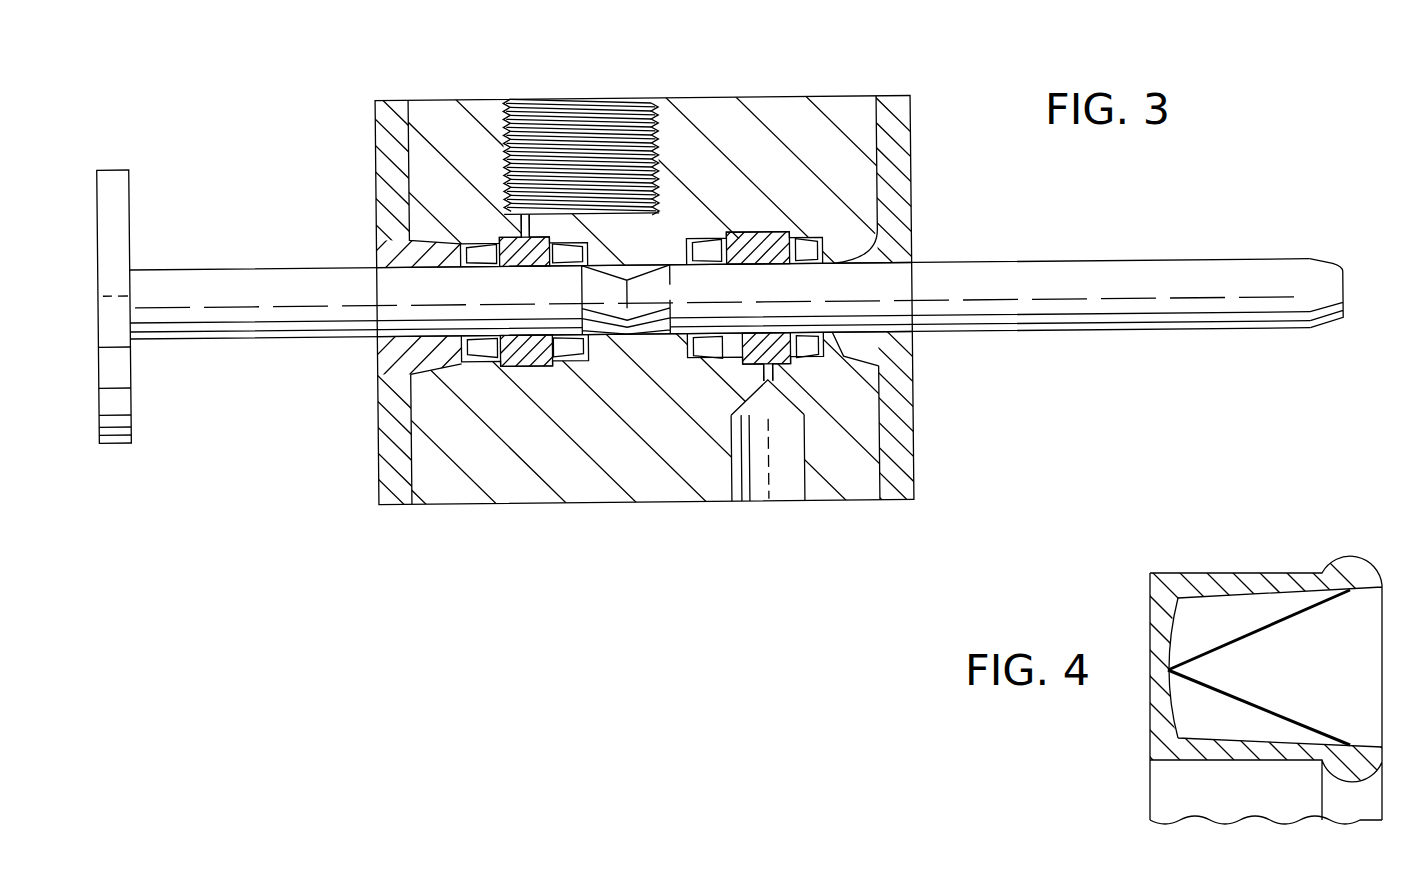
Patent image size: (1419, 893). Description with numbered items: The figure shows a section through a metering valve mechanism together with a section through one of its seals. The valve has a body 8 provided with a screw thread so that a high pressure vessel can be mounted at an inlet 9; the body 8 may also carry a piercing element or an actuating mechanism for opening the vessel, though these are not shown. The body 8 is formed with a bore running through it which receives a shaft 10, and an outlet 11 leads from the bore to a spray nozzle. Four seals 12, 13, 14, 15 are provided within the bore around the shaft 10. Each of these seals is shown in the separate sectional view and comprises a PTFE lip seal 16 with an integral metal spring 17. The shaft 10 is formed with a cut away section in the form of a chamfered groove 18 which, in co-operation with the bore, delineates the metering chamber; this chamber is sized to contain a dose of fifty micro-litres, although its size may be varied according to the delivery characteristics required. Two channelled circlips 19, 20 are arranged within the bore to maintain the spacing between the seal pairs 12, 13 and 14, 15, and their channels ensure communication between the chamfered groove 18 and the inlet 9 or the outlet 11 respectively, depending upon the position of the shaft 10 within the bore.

In FIG. 3, the body 8 is at (790, 108).
In FIG. 3, the inlet 9 is at (541, 134).
In FIG. 3, the shaft 10 is at (1000, 264).
In FIG. 3, the outlet 11 is at (755, 488).
In FIG. 3, the seal 12 is at (477, 342).
In FIG. 3, the seal 13 is at (568, 342).
In FIG. 3, the seal 14 is at (703, 340).
In FIG. 3, the seal 15 is at (813, 342).
In FIG. 4, the PTFE lip seal 16 is at (1222, 573).
In FIG. 4, the integral metal spring 17 is at (1300, 620).
In FIG. 3, the chamfered groove 18 is at (640, 262).
In FIG. 3, the channelled circlip 19 is at (503, 236).
In FIG. 3, the channelled circlip 20 is at (755, 242).